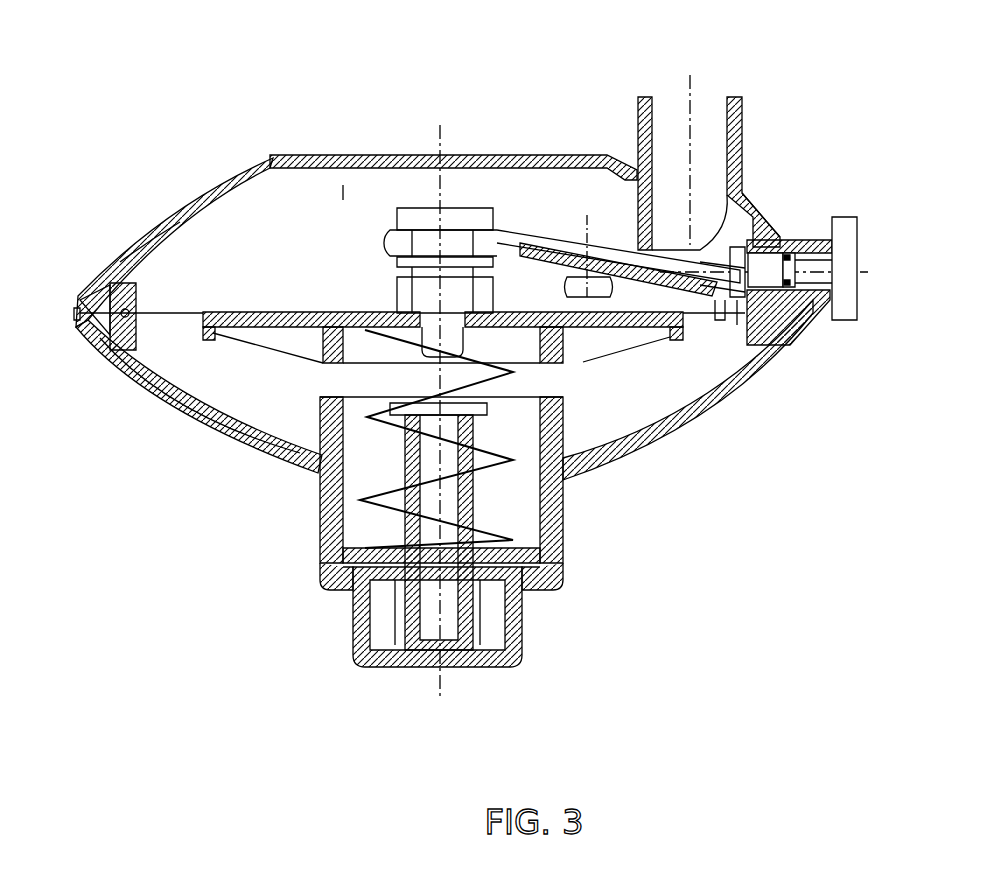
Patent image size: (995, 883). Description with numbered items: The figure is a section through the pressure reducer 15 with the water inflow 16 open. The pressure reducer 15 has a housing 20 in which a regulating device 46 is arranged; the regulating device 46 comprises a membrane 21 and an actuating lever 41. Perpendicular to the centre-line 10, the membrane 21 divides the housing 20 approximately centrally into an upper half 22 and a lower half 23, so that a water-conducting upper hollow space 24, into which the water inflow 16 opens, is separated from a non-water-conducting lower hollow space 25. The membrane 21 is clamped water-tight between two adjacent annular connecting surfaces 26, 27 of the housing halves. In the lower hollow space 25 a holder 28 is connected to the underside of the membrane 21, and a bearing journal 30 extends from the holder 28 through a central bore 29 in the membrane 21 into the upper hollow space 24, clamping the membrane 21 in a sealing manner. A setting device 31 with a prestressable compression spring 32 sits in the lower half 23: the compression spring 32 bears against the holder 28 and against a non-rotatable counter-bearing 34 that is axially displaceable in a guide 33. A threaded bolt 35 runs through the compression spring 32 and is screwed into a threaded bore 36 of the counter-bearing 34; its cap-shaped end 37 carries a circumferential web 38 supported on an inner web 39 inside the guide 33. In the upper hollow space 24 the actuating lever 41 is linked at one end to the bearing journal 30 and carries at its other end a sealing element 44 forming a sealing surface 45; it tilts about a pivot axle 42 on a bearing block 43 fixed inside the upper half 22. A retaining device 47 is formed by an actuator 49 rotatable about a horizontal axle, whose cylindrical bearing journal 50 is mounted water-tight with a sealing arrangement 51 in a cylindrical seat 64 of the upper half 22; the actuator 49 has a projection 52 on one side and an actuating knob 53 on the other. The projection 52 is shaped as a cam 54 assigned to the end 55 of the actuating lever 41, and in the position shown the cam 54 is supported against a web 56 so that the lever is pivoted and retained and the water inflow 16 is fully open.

The centre-line 10 is at (440, 673).
The pressure reducer 15 is at (213, 148).
The water inflow 16 is at (648, 95).
The housing 20 is at (157, 232).
The membrane 21 is at (137, 248).
The upper half 22 is at (335, 180).
The lower half 23 is at (147, 387).
The upper hollow space 24 is at (343, 185).
The lower hollow space 25 is at (197, 380).
The annular connecting surface 26 is at (117, 313).
The annular connecting surface 27 is at (77, 327).
The holder 28 is at (283, 343).
The central bore 29 is at (427, 310).
The bearing journal 30 is at (413, 217).
The setting device 31 is at (530, 660).
The compression spring 32 is at (482, 480).
The guide 33 is at (327, 513).
The counter-bearing 34 is at (347, 573).
The threaded bolt 35 is at (428, 640).
The threaded bore 36 is at (490, 660).
The cap-shaped end 37 is at (353, 630).
The circumferential web 38 is at (543, 577).
The inner web 39 is at (533, 587).
The actuating lever 41 is at (527, 247).
The pivot axle 42 is at (587, 257).
The bearing block 43 is at (533, 250).
The sealing element 44 is at (776, 161).
The sealing surface 45 is at (738, 172).
The regulating device 46 is at (317, 260).
The retaining device 47 is at (810, 203).
The actuator 49 is at (830, 207).
The cylindrical bearing journal 50 is at (820, 300).
The sealing arrangement 51 is at (787, 300).
The projection 52 is at (816, 367).
The actuating knob 53 is at (779, 234).
The cam 54 is at (753, 300).
The end of the actuating lever 55 is at (717, 300).
The web 56 is at (737, 300).
The cylindrical seat 64 is at (858, 243).